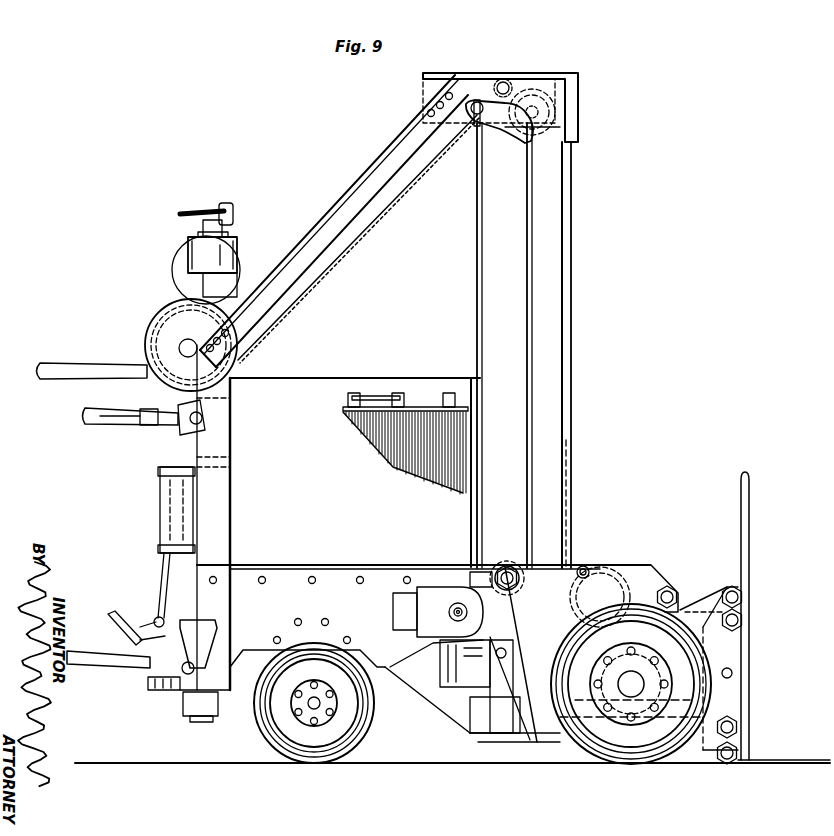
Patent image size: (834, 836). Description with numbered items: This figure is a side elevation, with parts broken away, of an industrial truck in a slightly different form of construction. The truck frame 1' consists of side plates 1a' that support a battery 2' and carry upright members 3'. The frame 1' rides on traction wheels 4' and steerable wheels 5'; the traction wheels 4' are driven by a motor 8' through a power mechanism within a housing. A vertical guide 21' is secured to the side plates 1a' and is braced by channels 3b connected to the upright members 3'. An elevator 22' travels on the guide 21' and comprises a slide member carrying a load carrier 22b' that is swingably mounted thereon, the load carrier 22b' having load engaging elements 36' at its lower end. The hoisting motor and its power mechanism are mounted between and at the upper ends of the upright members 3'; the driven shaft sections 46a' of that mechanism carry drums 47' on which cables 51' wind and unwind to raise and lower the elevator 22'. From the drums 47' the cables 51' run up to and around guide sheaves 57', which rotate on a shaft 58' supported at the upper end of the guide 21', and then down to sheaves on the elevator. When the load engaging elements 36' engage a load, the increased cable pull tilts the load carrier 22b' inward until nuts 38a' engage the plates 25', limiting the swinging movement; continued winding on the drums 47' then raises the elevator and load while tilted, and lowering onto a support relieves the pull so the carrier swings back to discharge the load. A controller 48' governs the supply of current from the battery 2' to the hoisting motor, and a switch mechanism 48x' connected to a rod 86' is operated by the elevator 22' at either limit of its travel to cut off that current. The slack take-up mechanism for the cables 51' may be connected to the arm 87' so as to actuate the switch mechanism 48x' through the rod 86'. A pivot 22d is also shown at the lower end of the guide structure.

The arm 87' is at (497, 73).
The shaft 58' is at (565, 112).
The guide sheaves 57' is at (499, 133).
The channels 3b is at (352, 187).
The cables 51' is at (358, 239).
The controller 48' is at (222, 253).
The driven shaft sections 46a' is at (171, 345).
The drums 47' is at (121, 389).
The rod 86' is at (463, 345).
The vertical guide 21' is at (542, 345).
The battery 2' is at (405, 443).
The upright members 3' is at (202, 533).
The elevator 22' is at (627, 579).
The plates 25' is at (695, 586).
The nuts 38a' is at (756, 608).
The load carrier 22b' is at (744, 618).
The load engaging elements 36' is at (784, 752).
The pivot 22d is at (520, 590).
The switch mechanism 48x' is at (436, 614).
The truck frame 1' is at (423, 648).
The side plates 1a' is at (470, 692).
The motor 8' is at (480, 686).
The steerable wheels 5' is at (319, 703).
The traction wheels 4' is at (629, 665).